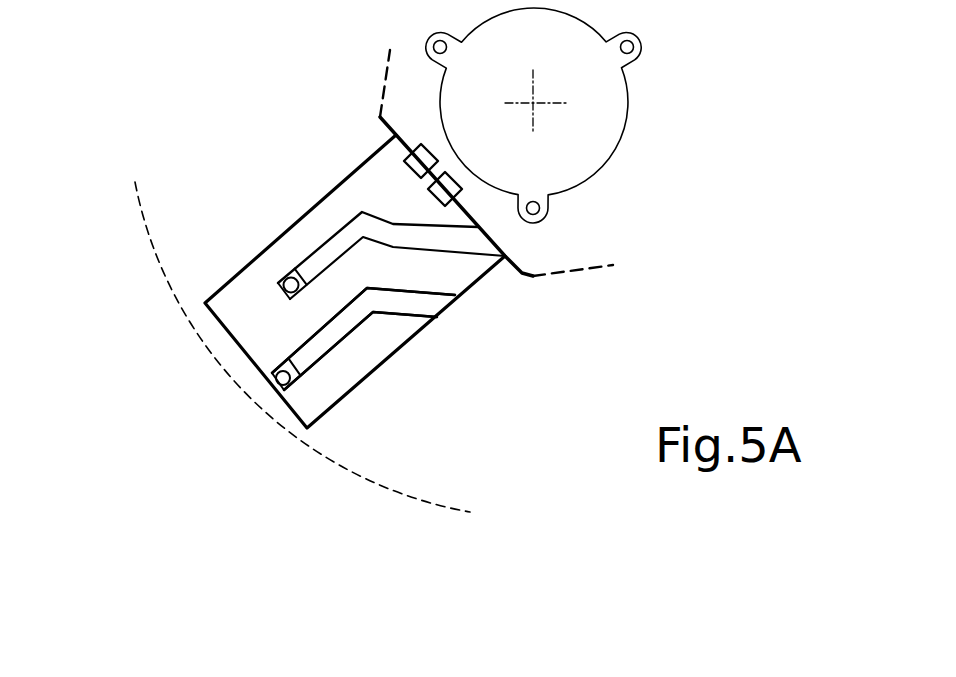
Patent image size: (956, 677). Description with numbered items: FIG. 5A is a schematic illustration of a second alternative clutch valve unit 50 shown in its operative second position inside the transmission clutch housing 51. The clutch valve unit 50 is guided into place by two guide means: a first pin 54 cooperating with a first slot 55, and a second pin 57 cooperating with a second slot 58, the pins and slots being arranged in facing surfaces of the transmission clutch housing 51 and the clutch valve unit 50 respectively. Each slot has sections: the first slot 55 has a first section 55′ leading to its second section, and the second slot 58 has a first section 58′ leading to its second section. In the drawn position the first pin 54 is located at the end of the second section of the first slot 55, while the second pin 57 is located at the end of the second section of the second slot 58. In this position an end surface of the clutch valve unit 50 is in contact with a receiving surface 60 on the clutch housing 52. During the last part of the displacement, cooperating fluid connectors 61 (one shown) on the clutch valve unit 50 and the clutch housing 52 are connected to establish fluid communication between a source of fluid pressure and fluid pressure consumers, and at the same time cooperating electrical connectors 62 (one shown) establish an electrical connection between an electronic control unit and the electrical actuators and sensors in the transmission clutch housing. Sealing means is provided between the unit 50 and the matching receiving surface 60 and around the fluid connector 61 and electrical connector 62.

The clutch valve unit 50 is at (240, 328).
The transmission clutch housing 51 is at (160, 263).
The clutch housing 52 is at (684, 54).
The first pin 54 is at (272, 380).
The first slot 55 is at (433, 362).
The lower spring arm inner leg 55′ is at (320, 345).
The second pin 57 is at (288, 280).
The second slot 58 is at (305, 200).
The upper spring arm inner leg 58′ is at (318, 272).
The receiving surface 60 is at (513, 268).
The fluid connector 61 is at (431, 130).
The electrical connector 62 is at (476, 179).